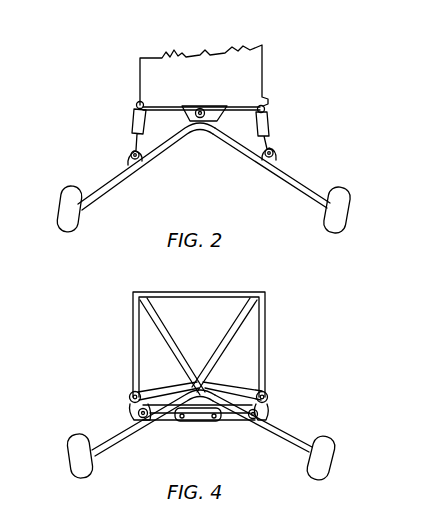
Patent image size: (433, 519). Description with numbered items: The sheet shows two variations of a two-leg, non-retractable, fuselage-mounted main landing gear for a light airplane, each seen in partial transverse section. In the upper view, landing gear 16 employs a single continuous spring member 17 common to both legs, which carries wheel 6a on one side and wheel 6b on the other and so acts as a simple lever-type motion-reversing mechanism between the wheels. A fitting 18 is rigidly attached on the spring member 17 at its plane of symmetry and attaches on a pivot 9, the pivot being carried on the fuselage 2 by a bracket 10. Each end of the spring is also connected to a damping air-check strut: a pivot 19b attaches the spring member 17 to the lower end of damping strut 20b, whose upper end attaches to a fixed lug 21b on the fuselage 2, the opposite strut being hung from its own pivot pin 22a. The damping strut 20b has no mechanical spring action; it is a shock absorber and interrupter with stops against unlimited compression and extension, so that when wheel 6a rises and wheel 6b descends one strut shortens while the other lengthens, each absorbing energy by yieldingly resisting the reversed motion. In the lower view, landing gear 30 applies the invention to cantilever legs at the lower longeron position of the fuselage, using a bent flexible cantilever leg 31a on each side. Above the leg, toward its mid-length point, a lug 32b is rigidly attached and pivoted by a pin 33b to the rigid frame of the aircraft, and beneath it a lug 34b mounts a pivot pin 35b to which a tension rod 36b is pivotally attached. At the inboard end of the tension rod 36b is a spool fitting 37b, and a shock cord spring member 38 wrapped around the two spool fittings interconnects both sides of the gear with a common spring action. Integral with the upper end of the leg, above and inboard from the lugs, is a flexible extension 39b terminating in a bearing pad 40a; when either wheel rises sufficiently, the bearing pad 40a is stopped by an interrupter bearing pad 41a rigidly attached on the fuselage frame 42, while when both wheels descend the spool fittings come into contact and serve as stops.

In FIG. 2, the fuselage 2 is at (264, 45).
In FIG. 2, the pivot 9 is at (200, 108).
In FIG. 2, the bracket 10 is at (222, 106).
In FIG. 2, the fitting 18 is at (180, 120).
In FIG. 2, the pivot pin 22a is at (137, 104).
In FIG. 2, the fixed lug 21b is at (270, 100).
In FIG. 2, the damping air-check strut 20b is at (271, 124).
In FIG. 2, the pivot 19b is at (278, 154).
In FIG. 2, the landing gear 16 is at (82, 197).
In FIG. 2, the continuous spring member 17 is at (126, 179).
In FIG. 2, the wheel 6a is at (62, 191).
In FIG. 4, the fuselage frame 42 is at (265, 292).
In FIG. 4, the bearing pad 40a is at (197, 381).
In FIG. 4, the interrupter bearing pad 41a is at (203, 380).
In FIG. 4, the flexible extension 39b is at (236, 392).
In FIG. 4, the lug 32b is at (269, 394).
In FIG. 4, the pin 33b is at (269, 401).
In FIG. 4, the lug 34b is at (257, 421).
In FIG. 4, the pivot pin 35b is at (249, 423).
In FIG. 4, the tension rod 36b is at (236, 423).
In FIG. 4, the spool fitting 37b is at (224, 423).
In FIG. 4, the shock cord spring member 38 is at (185, 424).
In FIG. 4, the landing gear 30 is at (90, 437).
In FIG. 4, the bent flexible cantilever leg 31a is at (102, 441).
In FIG. 4, the wheel 6b is at (333, 440).